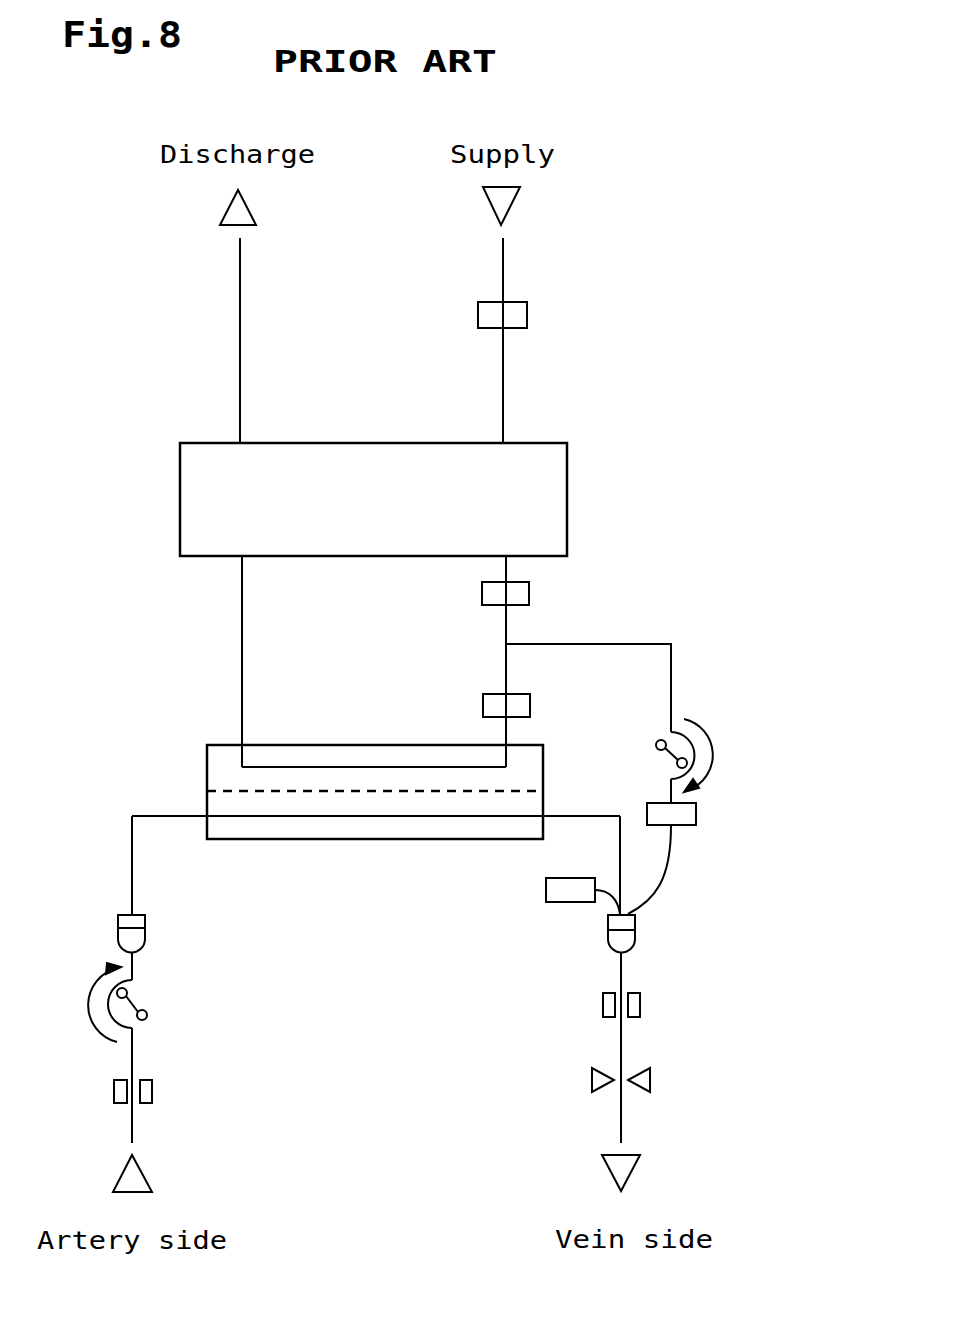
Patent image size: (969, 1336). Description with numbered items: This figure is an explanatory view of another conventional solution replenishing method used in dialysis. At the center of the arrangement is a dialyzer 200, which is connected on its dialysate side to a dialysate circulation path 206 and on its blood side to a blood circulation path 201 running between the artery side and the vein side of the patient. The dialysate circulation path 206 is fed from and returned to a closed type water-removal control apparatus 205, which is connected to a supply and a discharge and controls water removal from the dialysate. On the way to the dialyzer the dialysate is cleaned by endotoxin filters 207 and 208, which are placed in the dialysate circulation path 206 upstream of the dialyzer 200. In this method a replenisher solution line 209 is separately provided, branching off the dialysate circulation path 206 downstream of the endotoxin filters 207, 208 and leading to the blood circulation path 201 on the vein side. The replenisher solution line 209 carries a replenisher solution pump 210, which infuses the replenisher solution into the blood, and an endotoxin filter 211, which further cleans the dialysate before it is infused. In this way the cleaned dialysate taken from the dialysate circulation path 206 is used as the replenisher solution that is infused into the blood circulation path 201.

The dialyzer 200 is at (207, 755).
The blood circulation path 201 is at (621, 978).
The closed type water-removal control apparatus 205 is at (567, 498).
The dialysate circulation path 206 is at (242, 632).
The endotoxin filter 207 is at (528, 313).
The endotoxin filter 208 is at (530, 592).
The replenisher solution line 209 is at (671, 660).
The replenisher solution pump 210 is at (694, 745).
The endotoxin filter 211 is at (697, 816).